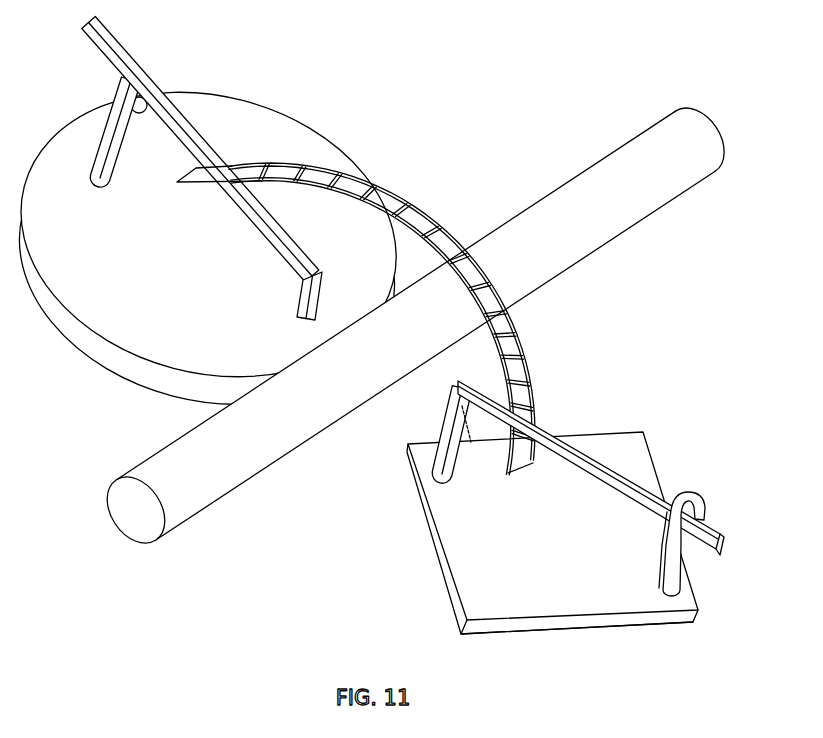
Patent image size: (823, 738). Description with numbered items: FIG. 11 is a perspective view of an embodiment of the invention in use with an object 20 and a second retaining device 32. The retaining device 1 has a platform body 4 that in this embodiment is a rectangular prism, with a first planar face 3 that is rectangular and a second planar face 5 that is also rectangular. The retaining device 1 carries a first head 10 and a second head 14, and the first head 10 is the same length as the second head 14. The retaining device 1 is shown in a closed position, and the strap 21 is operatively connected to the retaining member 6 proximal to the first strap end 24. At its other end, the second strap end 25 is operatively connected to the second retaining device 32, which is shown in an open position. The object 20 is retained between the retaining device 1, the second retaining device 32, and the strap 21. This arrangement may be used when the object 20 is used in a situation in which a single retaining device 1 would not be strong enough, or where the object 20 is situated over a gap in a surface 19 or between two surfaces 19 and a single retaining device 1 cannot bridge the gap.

The retaining device 1 is at (546, 541).
The first planar face 3 is at (630, 452).
The platform body 4 is at (695, 617).
The second planar face 5 is at (612, 633).
The retaining member 6 is at (736, 508).
The first head 10 is at (452, 430).
The second head 14 is at (683, 555).
The surface 19 is at (198, 610).
The object 20 is at (695, 142).
The strap 21 is at (431, 214).
The first strap end 24 is at (559, 396).
The second strap end 25 is at (284, 150).
The second retaining device 32 is at (272, 61).